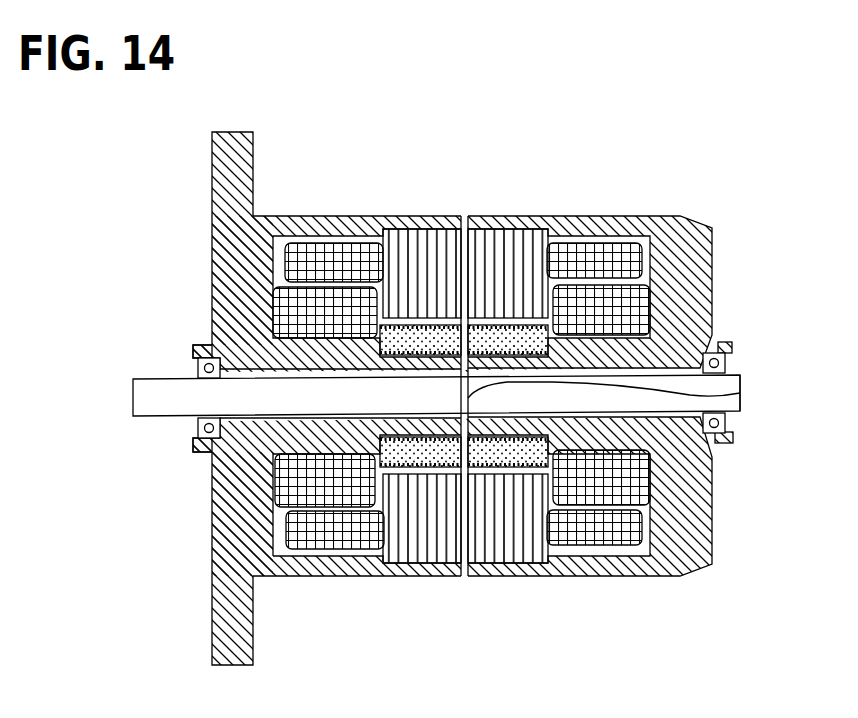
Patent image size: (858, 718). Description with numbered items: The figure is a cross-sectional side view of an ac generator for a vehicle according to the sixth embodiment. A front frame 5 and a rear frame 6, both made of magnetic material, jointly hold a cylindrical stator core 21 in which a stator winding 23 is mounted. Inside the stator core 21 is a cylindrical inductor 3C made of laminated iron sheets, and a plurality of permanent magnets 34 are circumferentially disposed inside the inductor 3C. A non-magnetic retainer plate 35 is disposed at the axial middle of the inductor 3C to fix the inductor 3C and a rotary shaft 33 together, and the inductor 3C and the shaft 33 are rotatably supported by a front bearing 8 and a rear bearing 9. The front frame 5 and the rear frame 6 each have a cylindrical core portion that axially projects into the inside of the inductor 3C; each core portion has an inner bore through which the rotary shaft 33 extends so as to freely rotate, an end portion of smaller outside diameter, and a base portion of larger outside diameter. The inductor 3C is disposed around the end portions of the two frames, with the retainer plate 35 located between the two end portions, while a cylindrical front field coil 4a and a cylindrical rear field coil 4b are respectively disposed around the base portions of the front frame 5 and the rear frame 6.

The front frame 5 is at (232, 162).
The rear frame 6 is at (675, 238).
The stator core 21 is at (474, 243).
The stator winding 23 is at (331, 257).
The front field coil 4a is at (295, 306).
The rear field coil 4b is at (633, 300).
The inductor 3C is at (553, 330).
The permanent magnets 34 is at (550, 440).
The rotary shaft 33 is at (162, 378).
The non-magnetic retainer plate 35 is at (741, 388).
The front bearing 8 is at (197, 423).
The rear bearing 9 is at (730, 423).